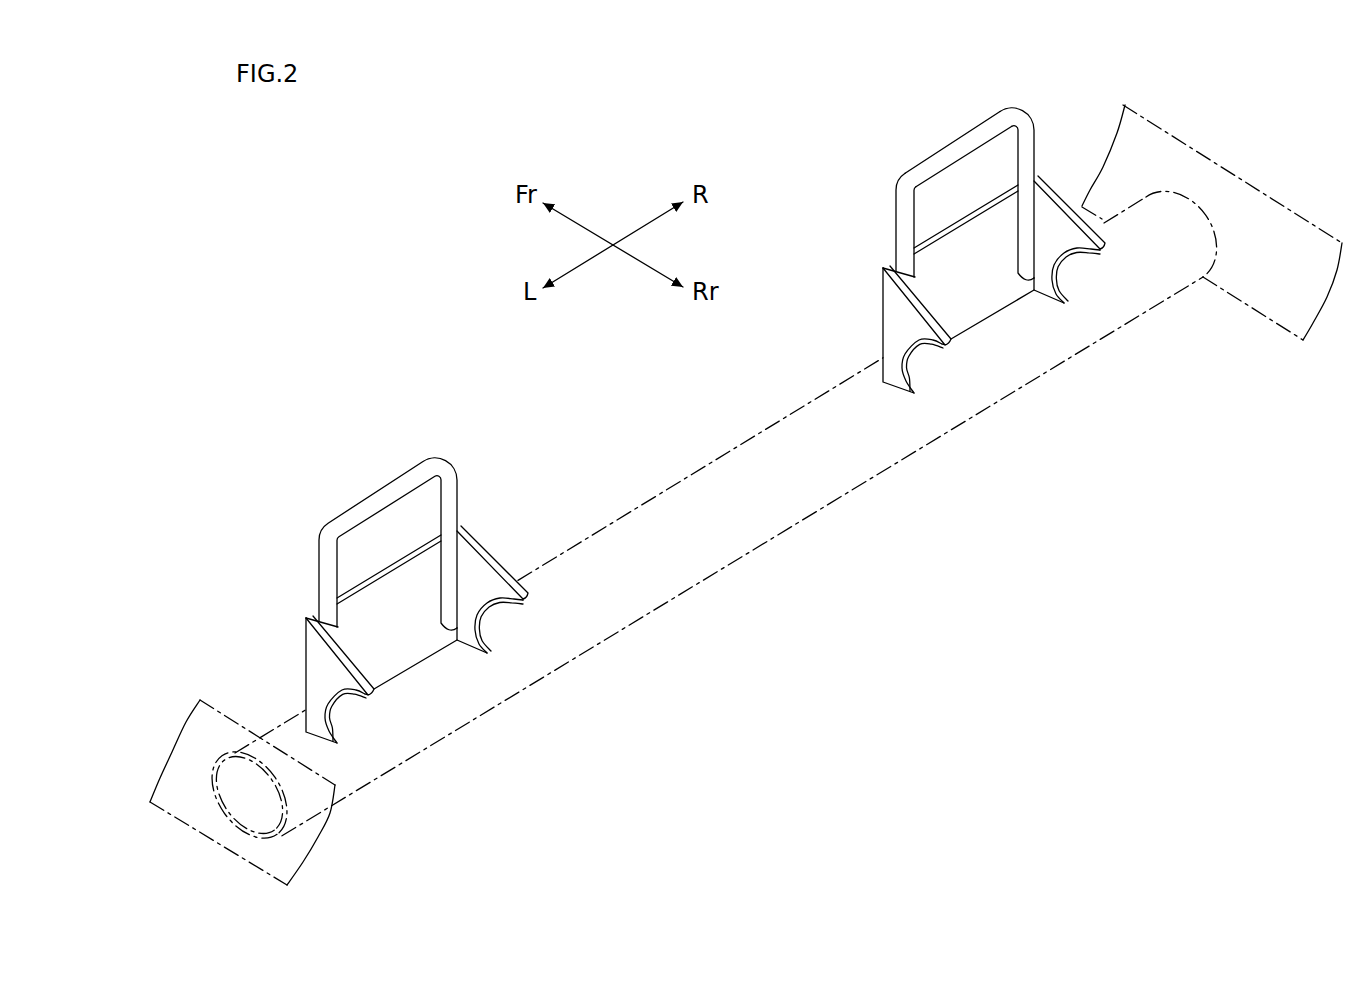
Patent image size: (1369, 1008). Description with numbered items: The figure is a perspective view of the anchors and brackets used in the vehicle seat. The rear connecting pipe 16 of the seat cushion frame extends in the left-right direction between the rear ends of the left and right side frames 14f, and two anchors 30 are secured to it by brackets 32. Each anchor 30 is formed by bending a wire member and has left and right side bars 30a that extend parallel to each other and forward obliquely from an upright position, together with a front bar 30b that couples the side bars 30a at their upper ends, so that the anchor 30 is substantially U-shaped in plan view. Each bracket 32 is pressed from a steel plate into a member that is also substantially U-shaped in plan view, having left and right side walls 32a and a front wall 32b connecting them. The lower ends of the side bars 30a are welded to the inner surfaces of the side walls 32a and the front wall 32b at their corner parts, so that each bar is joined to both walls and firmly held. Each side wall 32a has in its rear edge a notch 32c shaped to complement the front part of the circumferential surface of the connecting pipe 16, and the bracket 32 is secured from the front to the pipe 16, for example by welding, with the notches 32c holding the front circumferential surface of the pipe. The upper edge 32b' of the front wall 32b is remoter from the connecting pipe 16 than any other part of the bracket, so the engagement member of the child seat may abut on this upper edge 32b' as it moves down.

The side frame 14f is at (185, 815).
The rear connecting pipe 16 is at (650, 517).
The anchor 30 is at (722, 329).
The side bar 30a is at (903, 220).
The front bar 30b is at (928, 170).
The bracket 32 is at (681, 516).
The side wall 32a is at (500, 556).
The front wall 32b is at (671, 554).
The upper edge of the front wall 32b' is at (677, 394).
The notch 32c is at (503, 622).